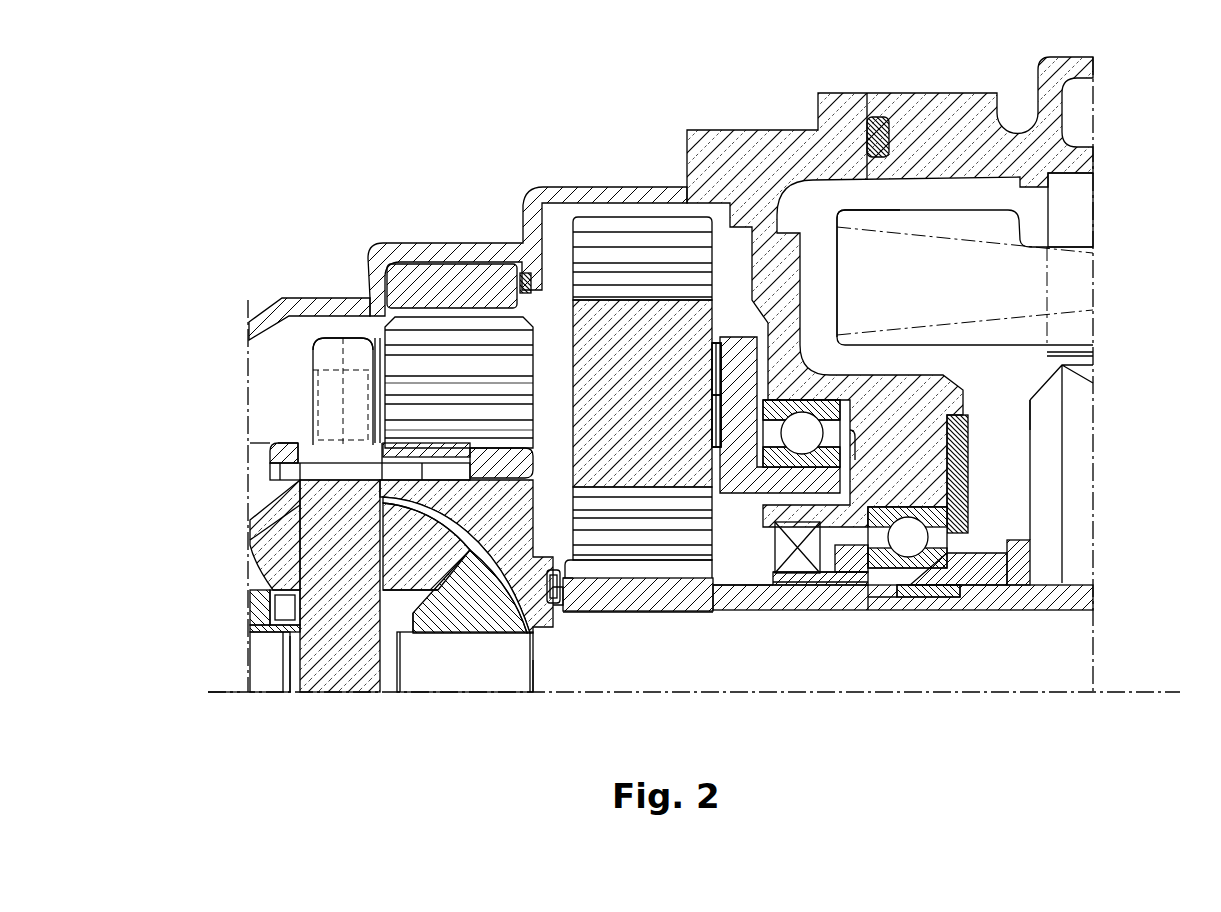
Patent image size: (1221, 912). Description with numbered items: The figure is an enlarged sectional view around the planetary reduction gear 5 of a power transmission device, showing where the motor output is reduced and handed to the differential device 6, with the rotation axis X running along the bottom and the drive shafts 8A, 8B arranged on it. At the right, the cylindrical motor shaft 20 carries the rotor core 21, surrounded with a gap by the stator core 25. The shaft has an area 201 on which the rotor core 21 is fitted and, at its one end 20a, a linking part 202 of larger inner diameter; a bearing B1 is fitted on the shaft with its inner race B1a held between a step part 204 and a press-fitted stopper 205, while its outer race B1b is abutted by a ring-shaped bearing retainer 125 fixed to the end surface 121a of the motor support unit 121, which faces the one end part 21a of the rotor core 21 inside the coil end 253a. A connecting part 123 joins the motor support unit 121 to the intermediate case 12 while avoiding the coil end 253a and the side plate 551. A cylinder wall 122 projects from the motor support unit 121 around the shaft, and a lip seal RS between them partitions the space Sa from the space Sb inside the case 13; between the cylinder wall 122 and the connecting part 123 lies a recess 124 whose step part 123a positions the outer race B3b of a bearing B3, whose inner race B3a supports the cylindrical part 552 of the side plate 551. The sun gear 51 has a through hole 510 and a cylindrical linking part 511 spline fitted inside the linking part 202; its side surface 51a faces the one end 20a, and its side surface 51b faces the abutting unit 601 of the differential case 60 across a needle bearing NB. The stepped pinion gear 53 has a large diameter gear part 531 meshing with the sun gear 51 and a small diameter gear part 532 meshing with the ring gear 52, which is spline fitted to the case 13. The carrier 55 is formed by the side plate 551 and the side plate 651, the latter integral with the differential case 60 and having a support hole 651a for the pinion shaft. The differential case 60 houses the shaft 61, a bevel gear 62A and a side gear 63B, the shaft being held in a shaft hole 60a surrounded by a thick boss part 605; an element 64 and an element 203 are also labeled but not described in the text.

The planetary reduction gear 5 is at (393, 200).
The differential device 6 is at (212, 455).
The intermediate case 12 is at (753, 125).
The case 13 is at (281, 296).
The motor shaft 20 is at (963, 612).
The one end 20a is at (770, 584).
The rotor core 21 is at (1117, 469).
The one end part 21a is at (1025, 410).
The stator core 25 is at (1096, 205).
The sun gear 51 is at (640, 586).
The side surface 51a is at (713, 612).
The side surface 51b is at (562, 612).
The ring gear 52 is at (427, 277).
The stepped pinion gear 53 is at (639, 75).
The carrier 55 is at (744, 332).
The differential case 60 is at (358, 514).
The shaft hole 60a is at (290, 443).
The shaft 61 is at (335, 665).
The bevel gear 62A is at (250, 533).
The side gear 63B is at (457, 617).
The bolt 64 is at (348, 400).
The motor support unit 121 is at (965, 304).
The end surface 121a is at (968, 398).
The cylinder wall 122 is at (800, 578).
The connecting part 123 is at (873, 220).
The step part 123a is at (832, 407).
The recess 124 is at (853, 437).
The bearing retainer 125 is at (968, 463).
The area 201 is at (1057, 600).
The linking part 202 is at (923, 598).
The base boss 203 is at (1020, 547).
The step part 204 is at (943, 577).
The stopper 205 is at (853, 577).
The coil end 253a is at (902, 207).
The through hole 510 is at (617, 608).
The linking part 511 is at (888, 610).
The large diameter gear part 531 is at (602, 240).
The small diameter gear part 532 is at (471, 259).
The side plate 551 is at (715, 362).
The cylindrical part 552 is at (853, 438).
The abutting unit 601 is at (550, 567).
The boss part 605 is at (432, 442).
The side plate 651 is at (350, 367).
The support hole 651a is at (350, 365).
The drive shaft 8A is at (263, 690).
The drive shaft 8B is at (572, 670).
The bearing B1 is at (1038, 515).
The inner race B1a is at (947, 553).
The outer race B1b is at (950, 510).
The bearing B3 is at (643, 445).
The inner race B3a is at (717, 432).
The outer race B3b is at (717, 407).
The needle bearing NB is at (530, 593).
The lip seal RS is at (775, 550).
The space Sa is at (1013, 525).
The space Sb is at (750, 532).
The rotation axis X is at (210, 690).